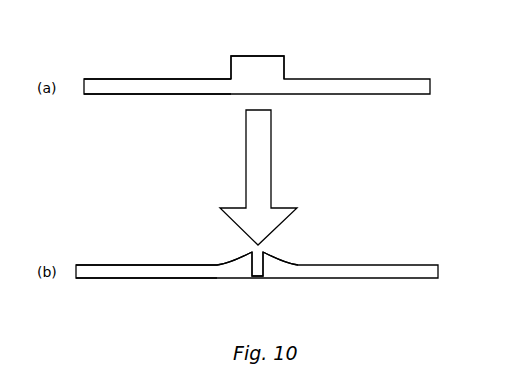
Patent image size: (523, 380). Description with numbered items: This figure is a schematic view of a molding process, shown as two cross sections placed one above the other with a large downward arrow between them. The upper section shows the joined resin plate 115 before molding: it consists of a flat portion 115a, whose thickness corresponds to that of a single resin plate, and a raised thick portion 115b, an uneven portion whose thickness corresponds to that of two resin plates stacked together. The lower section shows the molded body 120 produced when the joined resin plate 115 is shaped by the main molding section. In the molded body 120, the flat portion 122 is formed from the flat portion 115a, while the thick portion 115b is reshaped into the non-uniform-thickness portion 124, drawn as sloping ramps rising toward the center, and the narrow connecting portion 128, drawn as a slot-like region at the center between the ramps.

The joined resin plate 115 is at (370, 60).
The flat portion 115a is at (178, 86).
The thick portion 115b is at (278, 72).
The molded body 120 is at (388, 257).
The flat portion 122 is at (167, 270).
The non-uniform-thickness portion 124 is at (242, 267).
The connecting portion 128 is at (257, 277).